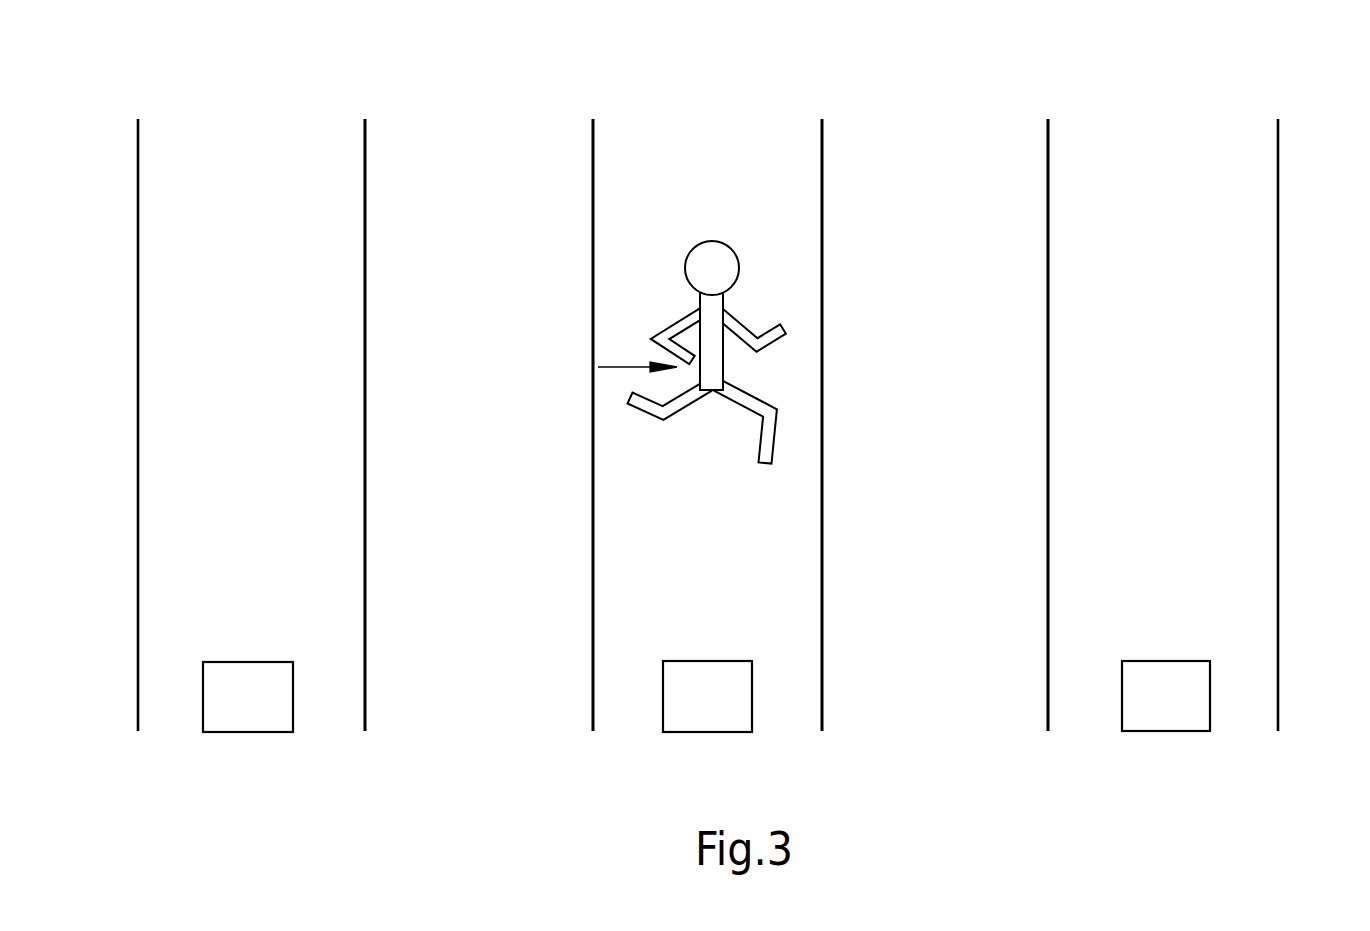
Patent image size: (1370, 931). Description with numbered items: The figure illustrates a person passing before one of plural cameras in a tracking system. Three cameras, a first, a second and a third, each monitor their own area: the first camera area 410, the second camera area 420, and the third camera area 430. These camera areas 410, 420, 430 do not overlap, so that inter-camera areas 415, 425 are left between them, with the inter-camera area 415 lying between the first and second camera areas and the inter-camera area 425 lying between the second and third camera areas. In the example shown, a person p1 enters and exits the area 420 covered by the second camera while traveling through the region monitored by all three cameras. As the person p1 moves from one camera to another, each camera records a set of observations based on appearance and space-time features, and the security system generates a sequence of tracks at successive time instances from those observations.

The area covered by camera C1 410 is at (288, 467).
The inter-camera area 415 is at (473, 385).
The area covered by camera C2 420 is at (745, 467).
The inter-camera area 425 is at (943, 382).
The area covered by camera C3 430 is at (1208, 467).
The person p1 is at (684, 252).